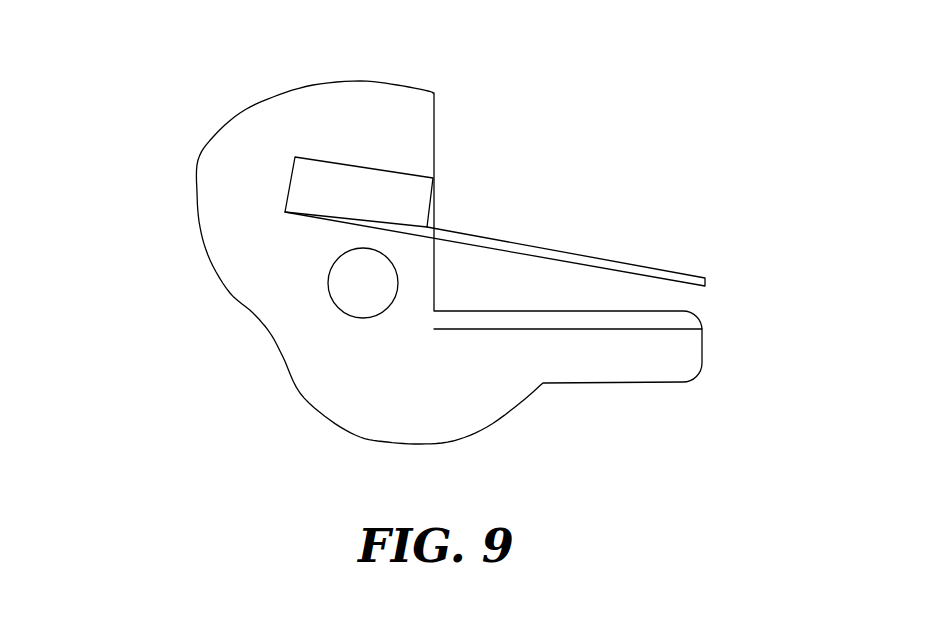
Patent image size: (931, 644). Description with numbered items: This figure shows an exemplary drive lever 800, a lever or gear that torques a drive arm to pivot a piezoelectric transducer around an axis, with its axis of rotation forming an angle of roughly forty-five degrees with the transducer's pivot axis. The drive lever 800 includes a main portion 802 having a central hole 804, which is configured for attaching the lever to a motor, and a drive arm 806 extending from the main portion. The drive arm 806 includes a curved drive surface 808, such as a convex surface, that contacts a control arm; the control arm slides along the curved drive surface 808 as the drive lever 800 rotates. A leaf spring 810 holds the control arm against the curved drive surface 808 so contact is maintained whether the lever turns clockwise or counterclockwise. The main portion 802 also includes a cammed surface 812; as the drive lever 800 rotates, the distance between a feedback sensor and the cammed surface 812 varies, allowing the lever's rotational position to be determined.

The drive lever 800 is at (664, 163).
The main portion 802 is at (293, 262).
The central hole 804 is at (363, 283).
The drive arm 806 is at (586, 366).
The curved drive surface 808 is at (630, 317).
The leaf spring 810 is at (678, 277).
The cammed surface 812 is at (388, 440).